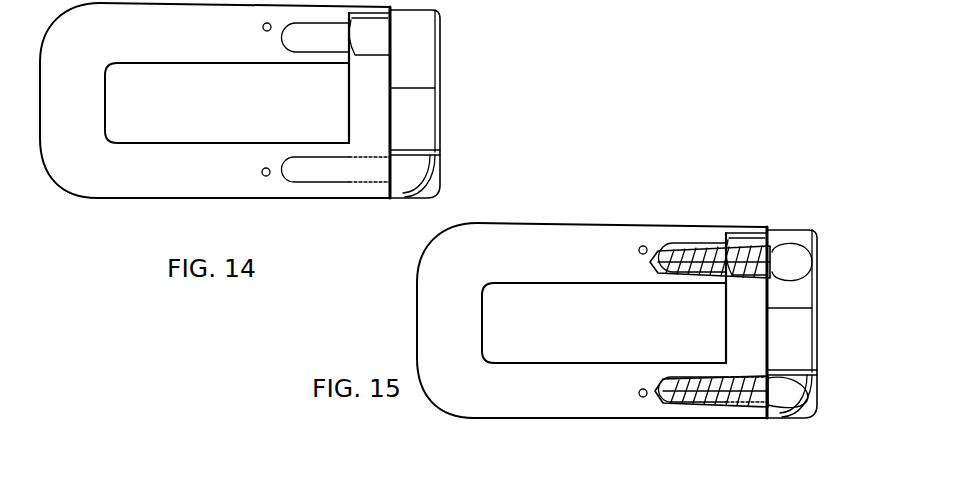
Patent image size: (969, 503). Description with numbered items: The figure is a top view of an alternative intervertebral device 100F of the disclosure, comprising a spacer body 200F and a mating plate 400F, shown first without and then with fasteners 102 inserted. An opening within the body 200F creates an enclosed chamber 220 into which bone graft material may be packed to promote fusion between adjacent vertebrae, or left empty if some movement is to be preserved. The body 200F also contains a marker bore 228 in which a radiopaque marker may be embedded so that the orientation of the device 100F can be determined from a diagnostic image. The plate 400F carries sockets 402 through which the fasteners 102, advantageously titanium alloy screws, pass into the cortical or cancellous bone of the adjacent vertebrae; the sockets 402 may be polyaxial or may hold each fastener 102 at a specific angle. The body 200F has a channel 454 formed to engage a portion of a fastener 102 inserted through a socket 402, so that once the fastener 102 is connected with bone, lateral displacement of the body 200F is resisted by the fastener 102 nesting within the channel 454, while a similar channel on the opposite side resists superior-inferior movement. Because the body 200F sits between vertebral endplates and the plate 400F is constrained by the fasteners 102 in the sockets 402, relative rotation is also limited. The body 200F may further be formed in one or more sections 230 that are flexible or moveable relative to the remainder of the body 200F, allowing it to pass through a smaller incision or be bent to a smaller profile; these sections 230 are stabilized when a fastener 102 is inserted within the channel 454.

In FIG. 15, the device 100F is at (563, 302).
In FIG. 15, the fastener 102 is at (685, 252).
In FIG. 14, the body 200F is at (178, 200).
In FIG. 15, the body 200F is at (592, 296).
In FIG. 14, the chamber 220 is at (198, 118).
In FIG. 15, the chamber 220 is at (604, 323).
In FIG. 15, the marker bore 228 is at (568, 350).
In FIG. 14, the section 230 is at (346, 84).
In FIG. 14, the plate 400F is at (472, 102).
In FIG. 15, the plate 400F is at (774, 302).
In FIG. 14, the socket 402 is at (443, 32).
In FIG. 15, the socket 402 is at (776, 354).
In FIG. 14, the channel 454 is at (330, 186).
In FIG. 15, the channel 454 is at (682, 322).